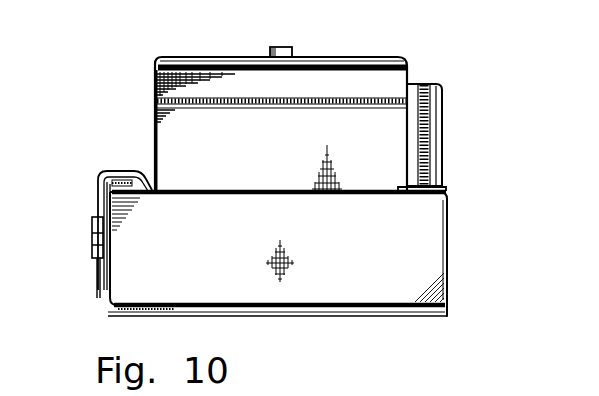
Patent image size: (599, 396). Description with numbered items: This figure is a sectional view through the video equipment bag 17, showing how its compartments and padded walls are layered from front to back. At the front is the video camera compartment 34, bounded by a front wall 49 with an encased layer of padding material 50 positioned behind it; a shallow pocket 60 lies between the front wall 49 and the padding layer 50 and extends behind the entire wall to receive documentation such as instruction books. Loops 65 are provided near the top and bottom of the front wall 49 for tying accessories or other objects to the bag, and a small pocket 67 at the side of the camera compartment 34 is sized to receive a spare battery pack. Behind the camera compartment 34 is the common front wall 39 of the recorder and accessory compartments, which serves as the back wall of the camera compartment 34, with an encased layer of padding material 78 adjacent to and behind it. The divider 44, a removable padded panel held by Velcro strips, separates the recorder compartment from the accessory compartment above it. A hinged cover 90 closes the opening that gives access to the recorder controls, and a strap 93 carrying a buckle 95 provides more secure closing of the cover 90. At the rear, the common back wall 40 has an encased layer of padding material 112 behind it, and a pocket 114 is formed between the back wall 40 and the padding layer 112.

The video equipment bag 17 is at (102, 108).
The video camera compartment 34 is at (167, 145).
The common front wall 39 is at (148, 180).
The common back wall 40 is at (340, 318).
The divider 44 is at (420, 233).
The front wall 49 is at (240, 56).
The encased layer of padding material 50 is at (355, 67).
The shallow pocket 60 is at (295, 63).
The loops 65 is at (278, 47).
The small pocket 67 is at (437, 118).
The encased layer of padding material 78 is at (287, 192).
The cover 90 is at (103, 268).
The strap 93 is at (95, 188).
The buckle 95 is at (92, 233).
The encased layer of padding material 112 is at (368, 303).
The pocket 114 is at (297, 315).